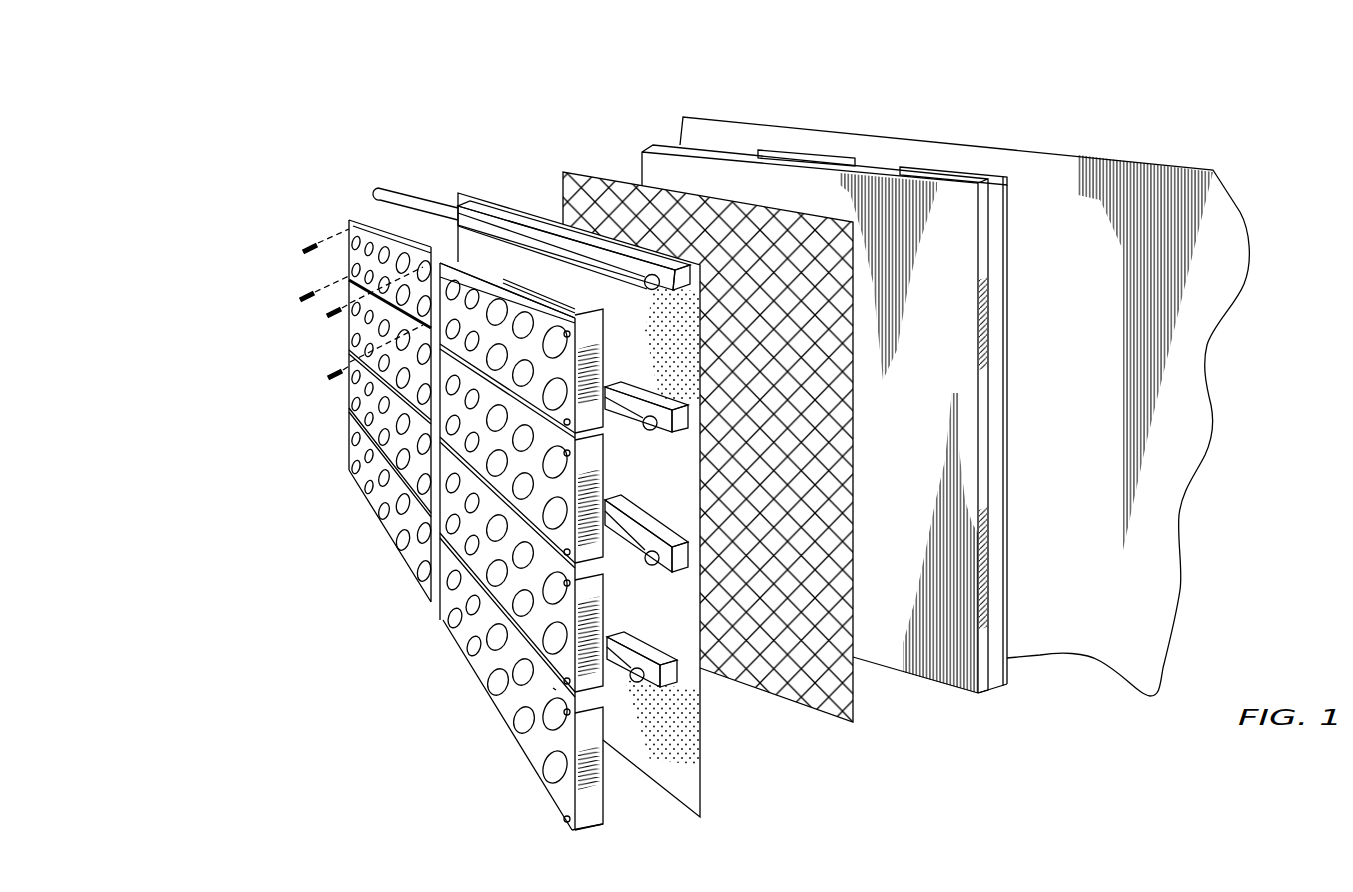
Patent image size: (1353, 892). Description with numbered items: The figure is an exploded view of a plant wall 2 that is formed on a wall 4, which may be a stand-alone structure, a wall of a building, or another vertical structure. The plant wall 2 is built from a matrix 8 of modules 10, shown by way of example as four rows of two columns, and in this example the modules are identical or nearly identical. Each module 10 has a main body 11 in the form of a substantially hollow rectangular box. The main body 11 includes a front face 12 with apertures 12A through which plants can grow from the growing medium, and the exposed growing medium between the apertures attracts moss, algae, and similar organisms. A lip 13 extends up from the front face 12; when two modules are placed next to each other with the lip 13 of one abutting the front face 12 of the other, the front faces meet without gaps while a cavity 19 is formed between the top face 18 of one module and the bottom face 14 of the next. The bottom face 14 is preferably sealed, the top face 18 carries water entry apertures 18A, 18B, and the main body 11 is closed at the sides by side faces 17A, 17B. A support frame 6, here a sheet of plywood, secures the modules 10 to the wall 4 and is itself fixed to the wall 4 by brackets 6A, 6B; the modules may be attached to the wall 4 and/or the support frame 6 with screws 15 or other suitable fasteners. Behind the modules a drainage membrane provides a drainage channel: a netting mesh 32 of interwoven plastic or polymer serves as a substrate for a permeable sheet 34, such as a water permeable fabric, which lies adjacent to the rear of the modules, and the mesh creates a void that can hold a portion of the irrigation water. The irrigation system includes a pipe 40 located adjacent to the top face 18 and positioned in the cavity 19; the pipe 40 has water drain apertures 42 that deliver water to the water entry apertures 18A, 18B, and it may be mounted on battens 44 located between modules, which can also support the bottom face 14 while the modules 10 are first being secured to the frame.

The plant wall 2 is at (283, 95).
The wall 4 is at (906, 137).
The support frame 6 is at (670, 142).
The bracket 6A is at (838, 148).
The bracket 6B is at (983, 168).
The matrix 8 is at (310, 584).
The module 10 is at (347, 437).
The main body 11 is at (500, 763).
The front face 12 is at (455, 637).
The aperture 12A is at (522, 672).
The lip 13 is at (553, 688).
The bottom face 14 is at (598, 843).
The screw 15 is at (305, 243).
The side face 17A is at (590, 740).
The side face 17B is at (425, 613).
The top face 18 is at (514, 282).
The water entry aperture 18A is at (462, 262).
The water entry aperture 18B is at (550, 303).
The cavity 19 is at (615, 578).
The netting mesh 32 is at (615, 185).
The permeable sheet 34 is at (672, 326).
The pipe 40 is at (656, 560).
The water drain aperture 42 is at (588, 266).
The batten 44 is at (675, 553).